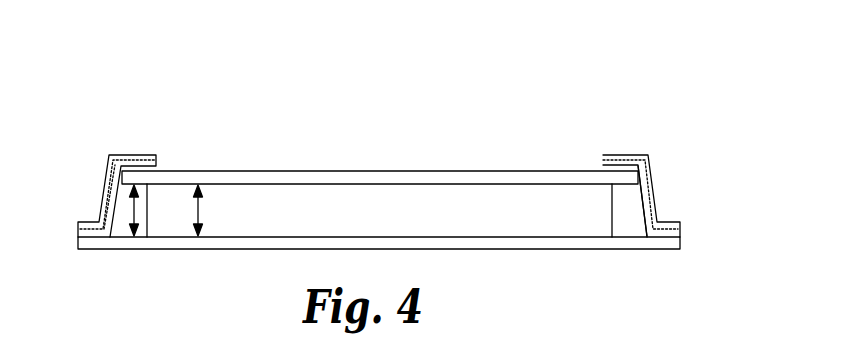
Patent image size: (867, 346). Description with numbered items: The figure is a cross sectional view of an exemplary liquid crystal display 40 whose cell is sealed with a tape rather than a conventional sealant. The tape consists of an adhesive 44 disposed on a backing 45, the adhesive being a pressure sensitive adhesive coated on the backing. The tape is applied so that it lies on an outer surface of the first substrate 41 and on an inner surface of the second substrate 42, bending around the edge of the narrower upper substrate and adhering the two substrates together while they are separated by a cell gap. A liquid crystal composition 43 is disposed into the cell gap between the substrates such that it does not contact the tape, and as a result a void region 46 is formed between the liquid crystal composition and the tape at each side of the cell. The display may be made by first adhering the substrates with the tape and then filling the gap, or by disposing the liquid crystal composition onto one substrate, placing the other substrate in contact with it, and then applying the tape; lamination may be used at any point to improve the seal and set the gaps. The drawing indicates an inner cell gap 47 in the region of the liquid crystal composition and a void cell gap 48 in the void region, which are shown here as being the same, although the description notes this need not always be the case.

The liquid crystal display 40 is at (524, 138).
The first substrate 41 is at (585, 175).
The second substrate 42 is at (677, 243).
The liquid crystal composition 43 is at (416, 195).
The adhesive 44 is at (648, 203).
The backing 45 is at (647, 170).
The void region 46 is at (628, 220).
The inner cell gap 47 is at (200, 208).
The void cell gap 48 is at (133, 208).